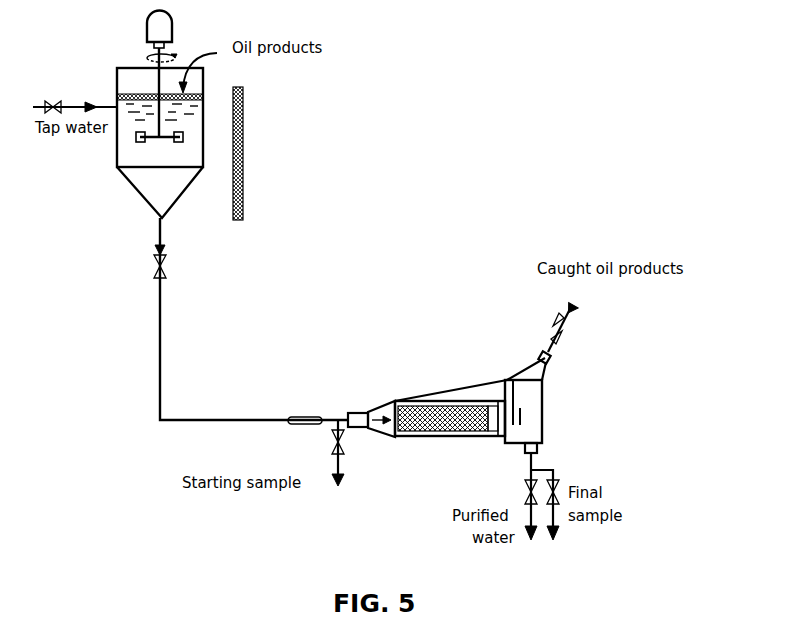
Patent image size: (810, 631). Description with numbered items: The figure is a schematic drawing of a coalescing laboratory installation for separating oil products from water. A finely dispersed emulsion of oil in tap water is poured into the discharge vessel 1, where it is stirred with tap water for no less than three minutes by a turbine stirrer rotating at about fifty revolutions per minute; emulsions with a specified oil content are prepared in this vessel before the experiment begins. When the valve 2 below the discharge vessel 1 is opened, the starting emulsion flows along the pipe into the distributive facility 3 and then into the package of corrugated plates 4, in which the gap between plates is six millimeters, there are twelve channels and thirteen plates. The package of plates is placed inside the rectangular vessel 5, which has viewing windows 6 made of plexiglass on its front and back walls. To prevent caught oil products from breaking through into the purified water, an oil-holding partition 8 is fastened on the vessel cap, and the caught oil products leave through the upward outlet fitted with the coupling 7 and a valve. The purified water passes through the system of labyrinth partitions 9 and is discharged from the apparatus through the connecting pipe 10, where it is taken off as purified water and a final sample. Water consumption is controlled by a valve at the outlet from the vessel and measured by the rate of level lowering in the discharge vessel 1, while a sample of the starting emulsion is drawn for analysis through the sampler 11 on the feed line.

The discharge vessel 1 is at (165, 155).
The valve 2 is at (165, 270).
The distributive facility 3 is at (377, 412).
The package of corrugated plates 4 is at (478, 422).
The rectangular vessel 5 is at (490, 425).
The viewing windows 6 is at (492, 400).
The coupling 7 is at (545, 354).
The oil-holding partition 8 is at (512, 380).
The system of labyrinth partitions 9 is at (520, 418).
The connecting pipe 10 is at (543, 430).
The sampler 11 is at (342, 455).